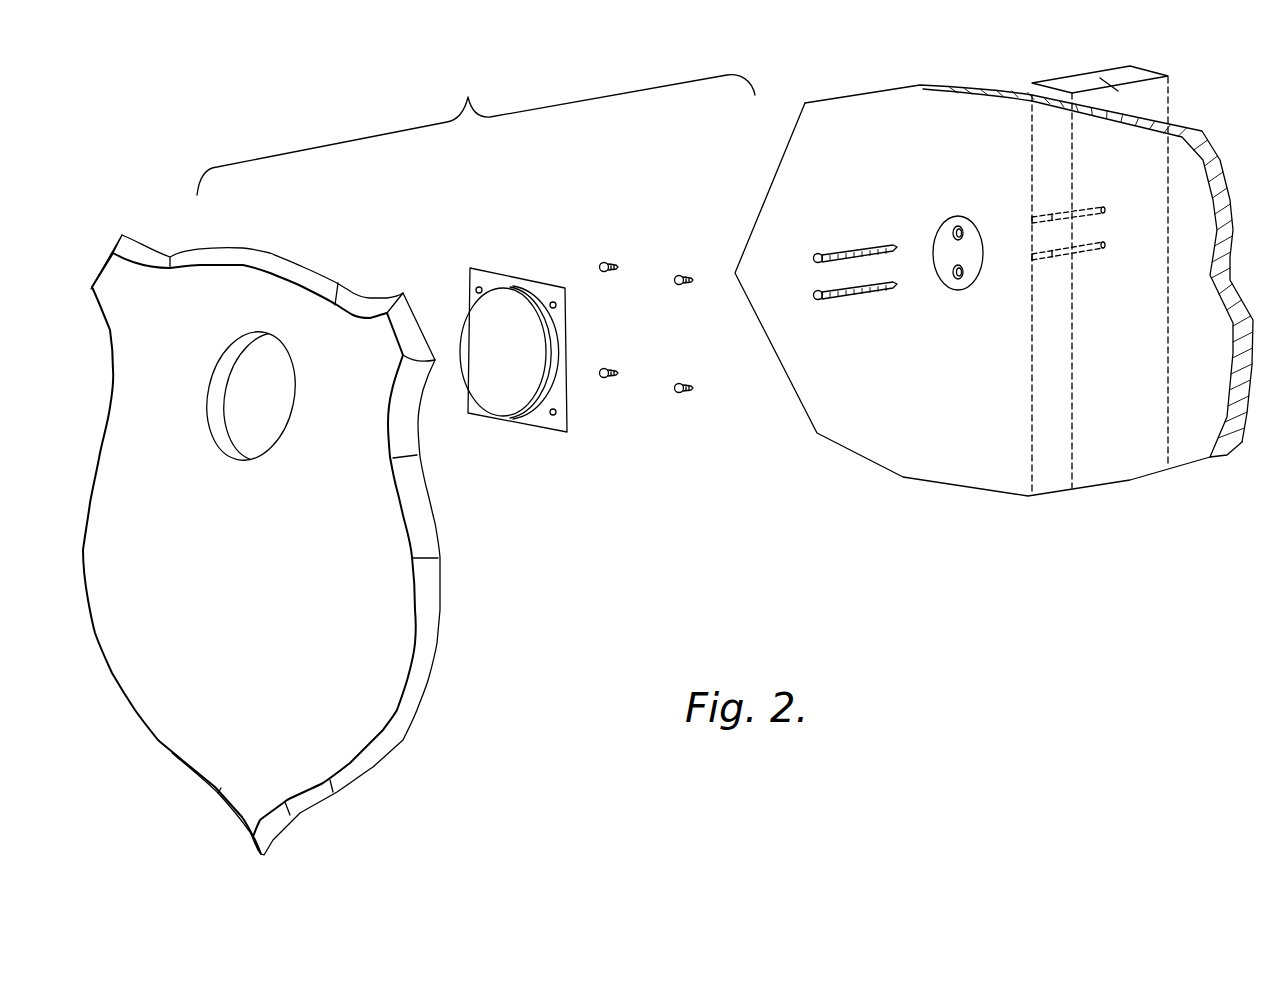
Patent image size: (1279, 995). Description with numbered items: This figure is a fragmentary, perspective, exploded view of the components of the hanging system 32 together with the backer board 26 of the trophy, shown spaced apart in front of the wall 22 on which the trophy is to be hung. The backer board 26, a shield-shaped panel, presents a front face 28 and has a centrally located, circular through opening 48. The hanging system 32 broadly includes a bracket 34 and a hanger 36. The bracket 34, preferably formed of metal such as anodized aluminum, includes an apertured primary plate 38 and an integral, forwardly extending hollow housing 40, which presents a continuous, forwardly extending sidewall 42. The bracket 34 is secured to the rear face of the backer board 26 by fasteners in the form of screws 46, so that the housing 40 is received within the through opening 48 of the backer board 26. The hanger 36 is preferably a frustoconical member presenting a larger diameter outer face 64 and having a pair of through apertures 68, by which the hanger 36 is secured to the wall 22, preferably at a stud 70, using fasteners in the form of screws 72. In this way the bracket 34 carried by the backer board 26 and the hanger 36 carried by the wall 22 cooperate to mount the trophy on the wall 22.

The wall 22 is at (980, 467).
The backer board 26 is at (301, 545).
The front face 28 is at (370, 713).
The hanging system 32 is at (752, 513).
The bracket 34 is at (549, 331).
The hanger 36 is at (874, 230).
The primary plate 38 is at (543, 420).
The hollow housing 40 is at (478, 313).
The sidewall 42 is at (552, 348).
The screws 46 is at (680, 272).
The through opening 48 is at (250, 460).
The outer face 64 is at (972, 260).
The through apertures 68 is at (950, 273).
The stud 70 is at (1157, 108).
The screws 72 is at (813, 297).